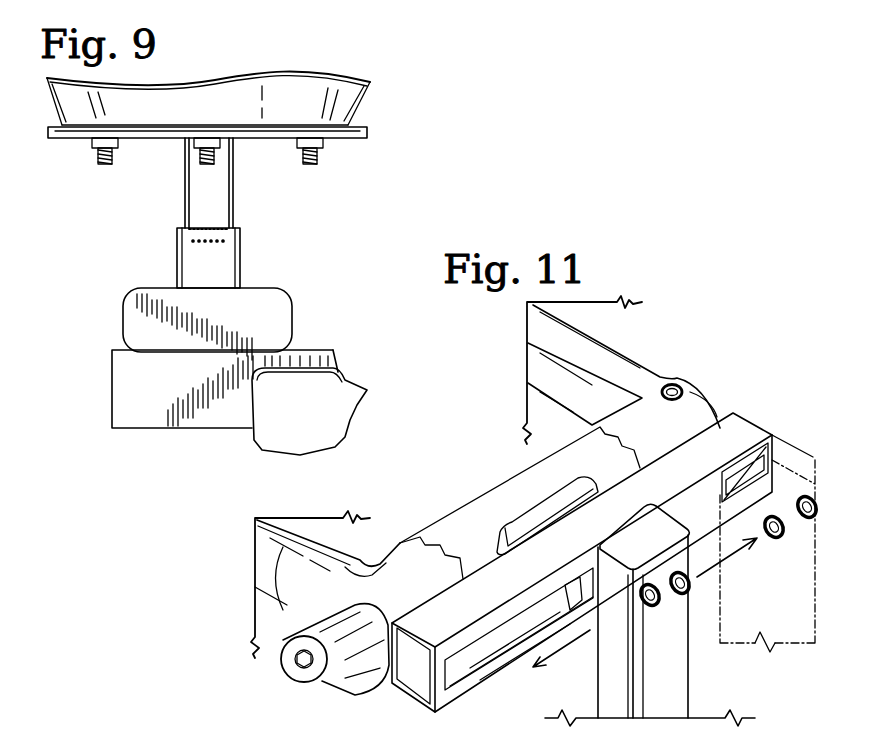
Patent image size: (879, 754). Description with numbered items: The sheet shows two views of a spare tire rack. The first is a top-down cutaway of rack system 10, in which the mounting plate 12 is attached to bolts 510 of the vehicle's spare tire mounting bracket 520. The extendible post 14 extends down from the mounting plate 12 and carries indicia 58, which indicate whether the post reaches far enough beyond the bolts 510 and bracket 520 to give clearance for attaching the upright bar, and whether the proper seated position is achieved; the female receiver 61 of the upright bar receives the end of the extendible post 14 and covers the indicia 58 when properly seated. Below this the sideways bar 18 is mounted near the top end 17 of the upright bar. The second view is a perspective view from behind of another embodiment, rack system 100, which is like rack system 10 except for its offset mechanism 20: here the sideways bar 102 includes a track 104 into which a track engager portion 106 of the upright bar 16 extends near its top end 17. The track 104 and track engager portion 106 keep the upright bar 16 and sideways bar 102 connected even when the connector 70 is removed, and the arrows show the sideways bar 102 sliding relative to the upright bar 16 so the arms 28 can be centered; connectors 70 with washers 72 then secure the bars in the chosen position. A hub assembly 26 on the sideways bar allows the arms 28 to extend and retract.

In FIG. 9, the rack system 10 is at (57, 377).
In FIG. 9, the mounting plate 12 is at (70, 140).
In FIG. 9, the extendible post 14 is at (198, 200).
In FIG. 11, the upright bar 16 is at (730, 650).
In FIG. 9, the top end 17 is at (137, 327).
In FIG. 11, the top end 17 is at (613, 547).
In FIG. 9, the sideways bar 18 is at (163, 394).
In FIG. 11, the offset mechanism 20 is at (762, 395).
In FIG. 11, the hub assembly 26 is at (289, 689).
In FIG. 11, the arms 28 is at (615, 368).
In FIG. 9, the indicia 58 is at (203, 222).
In FIG. 9, the female receiver 61 is at (221, 268).
In FIG. 11, the connectors 70 is at (808, 522).
In FIG. 11, the washers 72 is at (672, 575).
In FIG. 11, the rack system 100 is at (705, 322).
In FIG. 11, the sideways bar 102 is at (745, 432).
In FIG. 11, the track 104 is at (483, 662).
In FIG. 11, the track engager portion 106 is at (690, 520).
In FIG. 9, the bolts 510 is at (314, 163).
In FIG. 9, the spare tire mounting bracket 520 is at (248, 111).